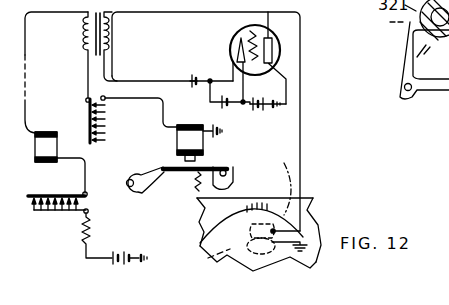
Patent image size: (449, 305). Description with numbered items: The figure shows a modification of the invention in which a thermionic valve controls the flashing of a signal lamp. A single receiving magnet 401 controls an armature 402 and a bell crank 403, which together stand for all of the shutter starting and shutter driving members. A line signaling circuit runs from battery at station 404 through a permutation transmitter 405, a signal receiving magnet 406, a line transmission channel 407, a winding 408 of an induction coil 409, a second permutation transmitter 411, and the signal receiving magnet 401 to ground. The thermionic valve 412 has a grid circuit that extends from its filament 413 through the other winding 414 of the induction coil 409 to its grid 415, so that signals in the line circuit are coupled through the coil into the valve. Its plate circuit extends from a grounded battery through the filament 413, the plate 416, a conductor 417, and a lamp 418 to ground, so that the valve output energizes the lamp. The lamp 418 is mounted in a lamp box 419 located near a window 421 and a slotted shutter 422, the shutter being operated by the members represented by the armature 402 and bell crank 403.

The signal receiving magnet 401 is at (177, 140).
The armature 402 is at (206, 166).
The bell crank 403 is at (149, 163).
The station 404 is at (98, 200).
The permutation transmitter 405 is at (89, 214).
The signal receiving magnet 406 is at (35, 150).
The line transmission channel 407 is at (27, 115).
The winding of induction coil 408 is at (84, 42).
The induction coil 409 is at (83, 23).
The permutation transmitter 411 is at (87, 100).
The thermionic valve 412 is at (230, 56).
The filament 413 is at (238, 40).
The winding of induction coil 414 is at (112, 44).
The grid 415 is at (247, 33).
The plate 416 is at (270, 61).
The conductor 417 is at (299, 130).
The lamp 418 is at (276, 198).
The lamp box 419 is at (280, 182).
The window 421 is at (201, 254).
The slotted shutter 422 is at (203, 215).